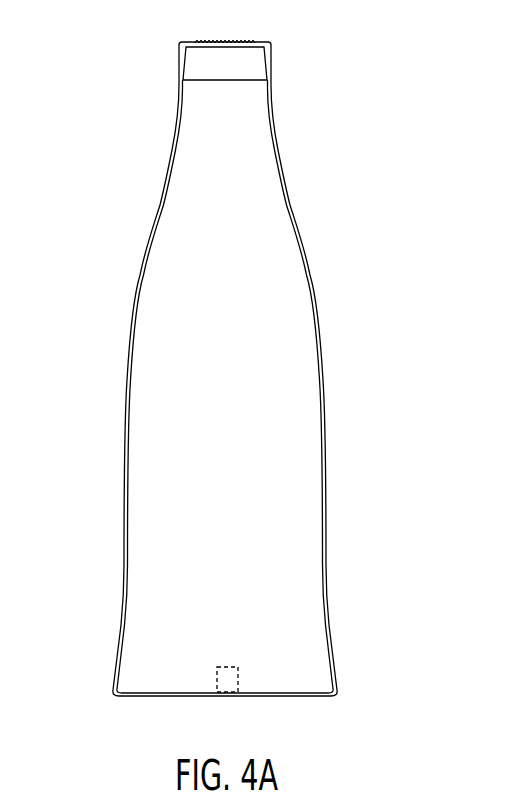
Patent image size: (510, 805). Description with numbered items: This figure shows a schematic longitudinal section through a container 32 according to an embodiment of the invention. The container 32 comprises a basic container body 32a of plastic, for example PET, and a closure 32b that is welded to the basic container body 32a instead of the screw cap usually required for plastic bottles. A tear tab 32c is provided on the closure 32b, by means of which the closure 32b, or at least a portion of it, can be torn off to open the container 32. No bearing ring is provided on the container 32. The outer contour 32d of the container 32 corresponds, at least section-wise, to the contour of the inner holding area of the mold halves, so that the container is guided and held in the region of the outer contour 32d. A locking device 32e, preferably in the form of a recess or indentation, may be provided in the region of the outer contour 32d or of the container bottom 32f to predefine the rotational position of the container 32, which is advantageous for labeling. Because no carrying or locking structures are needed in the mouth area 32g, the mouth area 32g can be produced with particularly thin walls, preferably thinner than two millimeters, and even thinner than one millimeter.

The container 32 is at (118, 372).
The basic container body 32a is at (300, 228).
The closure 32b is at (257, 40).
The tear tab 32c is at (213, 40).
The outer contour 32d is at (328, 477).
The locking device 32e is at (207, 677).
The container bottom 32f is at (307, 698).
The mouth area 32g is at (276, 67).